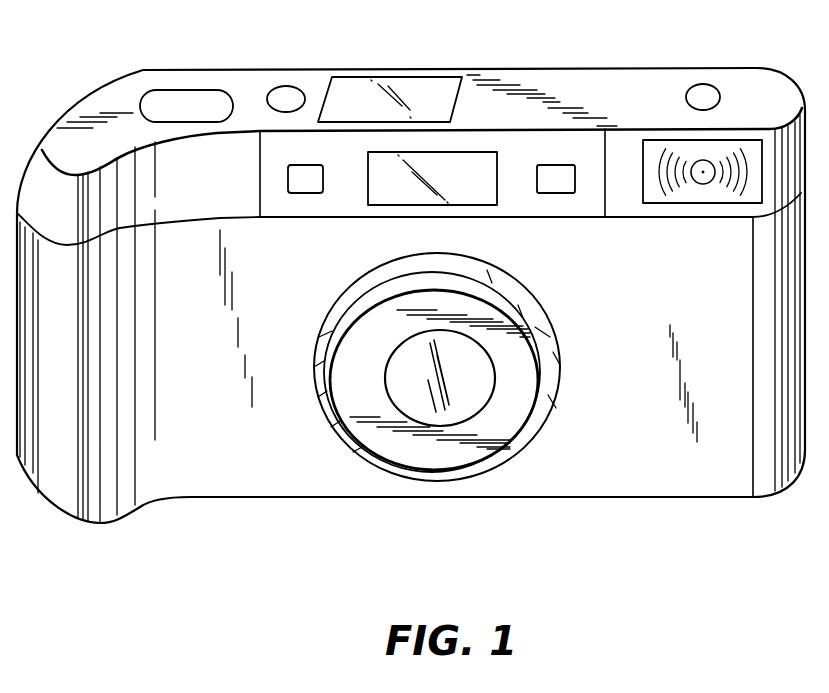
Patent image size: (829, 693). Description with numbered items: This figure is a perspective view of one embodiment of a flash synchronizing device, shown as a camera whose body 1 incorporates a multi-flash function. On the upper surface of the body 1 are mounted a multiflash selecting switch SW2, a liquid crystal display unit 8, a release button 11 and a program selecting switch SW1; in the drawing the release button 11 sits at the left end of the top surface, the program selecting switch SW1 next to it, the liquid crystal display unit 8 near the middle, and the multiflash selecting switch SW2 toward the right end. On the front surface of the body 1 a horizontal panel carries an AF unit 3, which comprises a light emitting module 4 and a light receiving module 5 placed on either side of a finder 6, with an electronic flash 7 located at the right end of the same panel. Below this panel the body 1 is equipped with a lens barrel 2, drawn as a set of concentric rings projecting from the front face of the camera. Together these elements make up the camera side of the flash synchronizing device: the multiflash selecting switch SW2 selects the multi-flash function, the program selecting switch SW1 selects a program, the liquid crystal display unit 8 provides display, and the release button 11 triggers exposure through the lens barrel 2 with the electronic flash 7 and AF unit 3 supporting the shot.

The body 1 is at (717, 497).
The lens barrel 2 is at (540, 363).
The AF unit 3 is at (263, 197).
The light emitting module 4 is at (298, 193).
The light receiving module 5 is at (563, 193).
The finder 6 is at (498, 193).
The electronic flash 7 is at (683, 203).
The liquid crystal display unit 8 is at (420, 77).
The release button 11 is at (192, 90).
The program selecting switch SW1 is at (292, 87).
The multiflash selecting switch SW2 is at (710, 85).